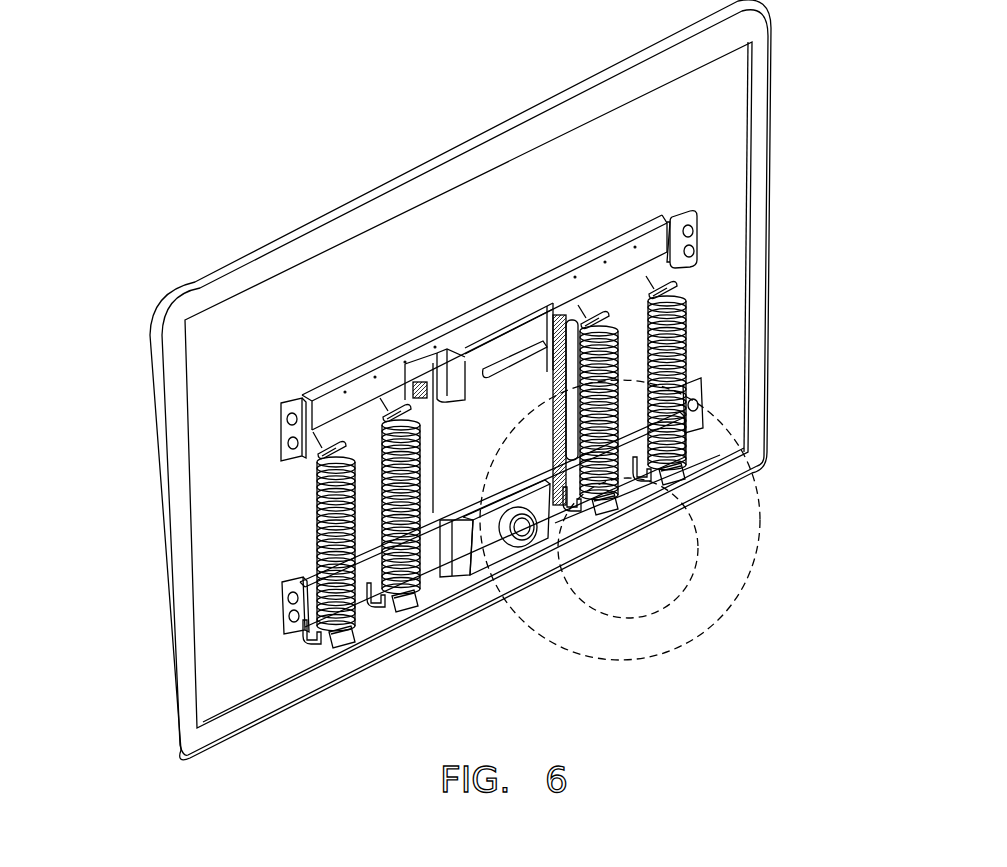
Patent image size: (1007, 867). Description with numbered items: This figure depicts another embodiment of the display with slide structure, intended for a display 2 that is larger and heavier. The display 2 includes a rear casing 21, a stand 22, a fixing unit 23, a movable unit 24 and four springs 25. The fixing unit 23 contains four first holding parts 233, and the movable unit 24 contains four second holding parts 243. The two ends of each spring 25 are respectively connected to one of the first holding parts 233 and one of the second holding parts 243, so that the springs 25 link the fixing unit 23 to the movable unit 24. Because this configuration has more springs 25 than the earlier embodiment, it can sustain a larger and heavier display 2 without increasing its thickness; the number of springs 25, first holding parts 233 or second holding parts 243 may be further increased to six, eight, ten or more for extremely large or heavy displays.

The display 2 is at (947, 677).
The rear casing 21 is at (720, 100).
The stand 22 is at (757, 578).
The fixing unit 23 is at (497, 318).
The first holding part 233 is at (348, 635).
The movable unit 24 is at (492, 355).
The second holding part 243 is at (680, 298).
The spring 25 is at (690, 350).